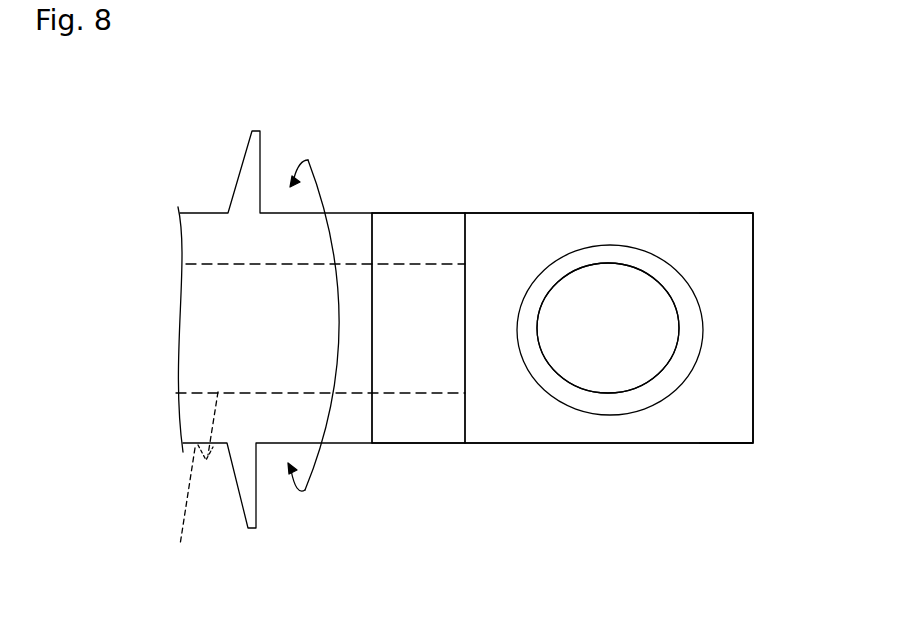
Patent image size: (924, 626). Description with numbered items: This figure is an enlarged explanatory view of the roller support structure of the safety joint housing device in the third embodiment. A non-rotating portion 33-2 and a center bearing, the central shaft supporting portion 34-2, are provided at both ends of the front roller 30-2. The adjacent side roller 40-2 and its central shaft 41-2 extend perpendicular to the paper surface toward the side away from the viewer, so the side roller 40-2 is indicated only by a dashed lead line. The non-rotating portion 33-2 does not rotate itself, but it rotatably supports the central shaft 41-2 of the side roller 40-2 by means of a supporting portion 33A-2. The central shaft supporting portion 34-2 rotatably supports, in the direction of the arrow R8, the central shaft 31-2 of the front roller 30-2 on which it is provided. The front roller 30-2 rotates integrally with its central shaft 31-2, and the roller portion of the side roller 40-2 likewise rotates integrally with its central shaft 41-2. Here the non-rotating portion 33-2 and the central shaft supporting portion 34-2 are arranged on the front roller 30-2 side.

The front roller 30-2 is at (205, 183).
The central shaft 31-2 is at (182, 489).
The arrow indicating rotation direction R8 is at (321, 178).
The central shaft supporting portion 34-2 is at (428, 225).
The side roller 40-2 is at (632, 190).
The non-rotating portion 33-2 is at (728, 223).
The supporting portion 33A-2 is at (692, 298).
The central shaft 41-2 is at (640, 387).